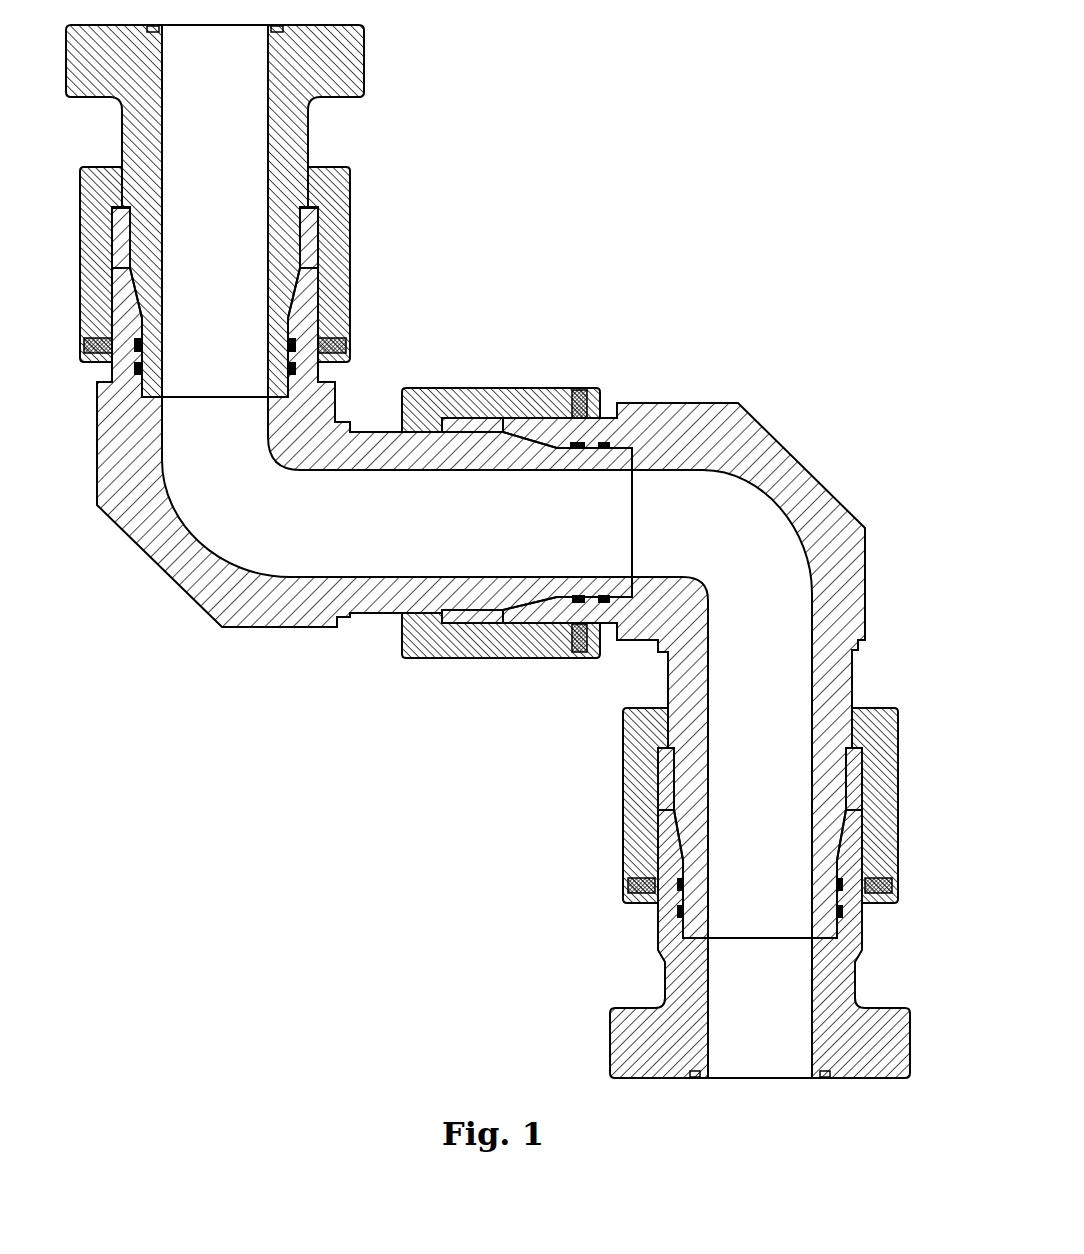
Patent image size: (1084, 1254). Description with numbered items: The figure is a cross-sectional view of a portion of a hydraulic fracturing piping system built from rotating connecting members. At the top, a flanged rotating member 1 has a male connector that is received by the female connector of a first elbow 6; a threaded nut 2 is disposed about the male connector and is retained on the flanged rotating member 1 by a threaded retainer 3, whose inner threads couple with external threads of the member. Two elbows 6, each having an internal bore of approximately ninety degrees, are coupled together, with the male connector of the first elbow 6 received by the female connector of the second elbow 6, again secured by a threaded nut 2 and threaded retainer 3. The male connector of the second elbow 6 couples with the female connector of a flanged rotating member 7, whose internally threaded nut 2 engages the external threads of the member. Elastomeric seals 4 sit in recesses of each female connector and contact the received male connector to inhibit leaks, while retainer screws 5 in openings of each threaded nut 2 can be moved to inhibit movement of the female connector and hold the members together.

The flanged rotating member 1 is at (338, 66).
The threaded nut 2 is at (330, 186).
The threaded retainer 3 is at (320, 236).
The elastomeric seal 4 is at (134, 345).
The retainer screw 5 is at (346, 340).
The elbow 6 is at (773, 470).
The flanged rotating member 7 is at (878, 1040).